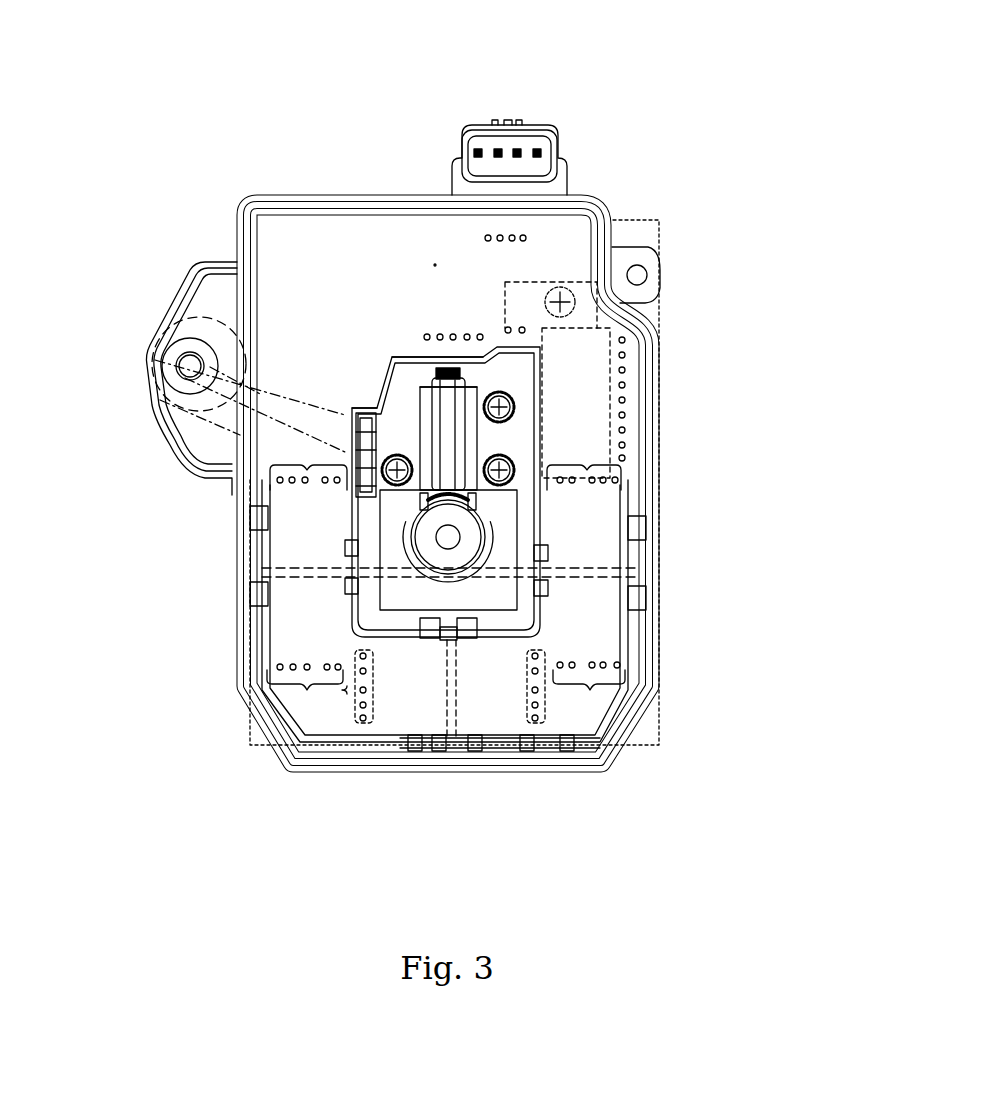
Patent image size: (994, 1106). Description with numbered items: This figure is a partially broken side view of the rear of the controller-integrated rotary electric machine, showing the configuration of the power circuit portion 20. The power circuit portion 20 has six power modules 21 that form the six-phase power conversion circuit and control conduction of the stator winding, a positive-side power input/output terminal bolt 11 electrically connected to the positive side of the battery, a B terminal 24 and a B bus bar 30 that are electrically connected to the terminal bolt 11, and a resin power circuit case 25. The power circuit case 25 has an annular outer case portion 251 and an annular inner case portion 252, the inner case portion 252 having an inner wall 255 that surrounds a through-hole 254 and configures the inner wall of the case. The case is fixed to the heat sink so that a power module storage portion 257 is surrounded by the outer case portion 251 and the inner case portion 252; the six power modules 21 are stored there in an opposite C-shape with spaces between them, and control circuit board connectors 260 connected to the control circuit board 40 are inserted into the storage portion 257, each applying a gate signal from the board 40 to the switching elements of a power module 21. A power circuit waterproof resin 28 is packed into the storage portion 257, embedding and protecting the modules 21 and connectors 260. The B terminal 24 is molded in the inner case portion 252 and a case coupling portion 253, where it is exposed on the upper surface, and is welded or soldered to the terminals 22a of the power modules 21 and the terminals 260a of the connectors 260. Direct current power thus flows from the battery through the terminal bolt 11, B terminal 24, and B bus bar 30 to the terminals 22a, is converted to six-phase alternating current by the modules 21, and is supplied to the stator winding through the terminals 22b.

The power circuit portion 20 is at (636, 184).
The control circuit board 40 is at (460, 273).
The positive-side power input/output terminal bolt 11 is at (200, 375).
The power module storage portion 257 is at (660, 380).
The case coupling portion 253 is at (340, 437).
The B terminal 24 is at (390, 505).
The B bus bar 30 is at (305, 500).
The control circuit board connectors 260 is at (307, 470).
The terminals of the control circuit board connectors 260a is at (555, 690).
The power circuit case 25 is at (363, 83).
The outer case portion 251 is at (258, 195).
The inner case portion 252 is at (370, 352).
The through-hole 254 is at (365, 350).
The inner wall 255 is at (400, 350).
The power circuit waterproof resin 28 is at (435, 265).
The power modules 21 is at (307, 500).
The terminals of the power modules 22a is at (353, 548).
The terminals of the power modules 22b is at (645, 527).